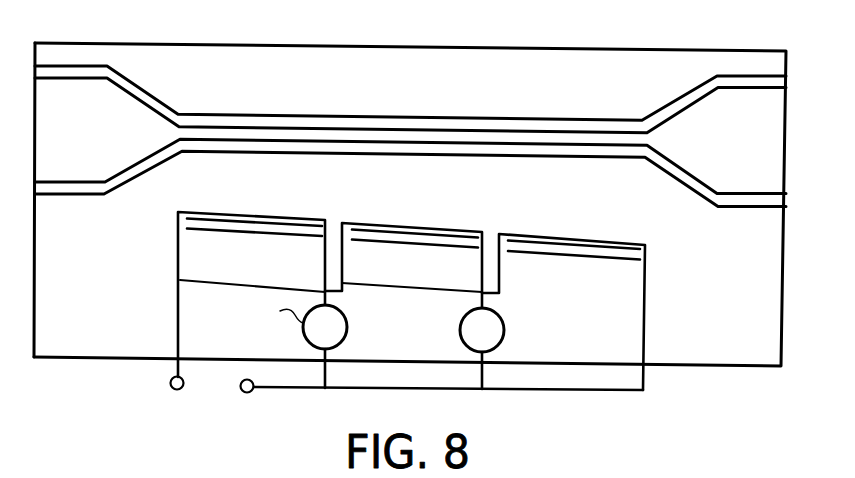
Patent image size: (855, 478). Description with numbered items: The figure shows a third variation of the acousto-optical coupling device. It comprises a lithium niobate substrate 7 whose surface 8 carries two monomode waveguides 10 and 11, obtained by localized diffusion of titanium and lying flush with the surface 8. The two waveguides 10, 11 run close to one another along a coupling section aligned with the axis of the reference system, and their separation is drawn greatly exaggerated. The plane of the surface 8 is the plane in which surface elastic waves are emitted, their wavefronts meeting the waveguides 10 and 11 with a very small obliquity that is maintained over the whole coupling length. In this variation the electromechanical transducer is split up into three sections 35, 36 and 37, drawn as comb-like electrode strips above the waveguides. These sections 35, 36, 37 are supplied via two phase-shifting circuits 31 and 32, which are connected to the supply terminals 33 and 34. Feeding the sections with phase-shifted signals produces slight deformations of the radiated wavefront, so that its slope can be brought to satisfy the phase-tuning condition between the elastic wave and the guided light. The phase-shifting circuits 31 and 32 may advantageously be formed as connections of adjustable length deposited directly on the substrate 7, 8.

The lithium niobate substrate 7 is at (108, 359).
The surface of the substrate 8 is at (47, 340).
The monomode waveguide 10 is at (264, 114).
The monomode waveguide 11 is at (262, 152).
The phase-shifting circuit 31 is at (347, 327).
The phase-shifting circuit 32 is at (523, 313).
The supply terminal 33 is at (171, 383).
The supply terminal 34 is at (242, 391).
The transducer section 35 is at (260, 192).
The transducer section 36 is at (388, 222).
The transducer section 37 is at (553, 218).